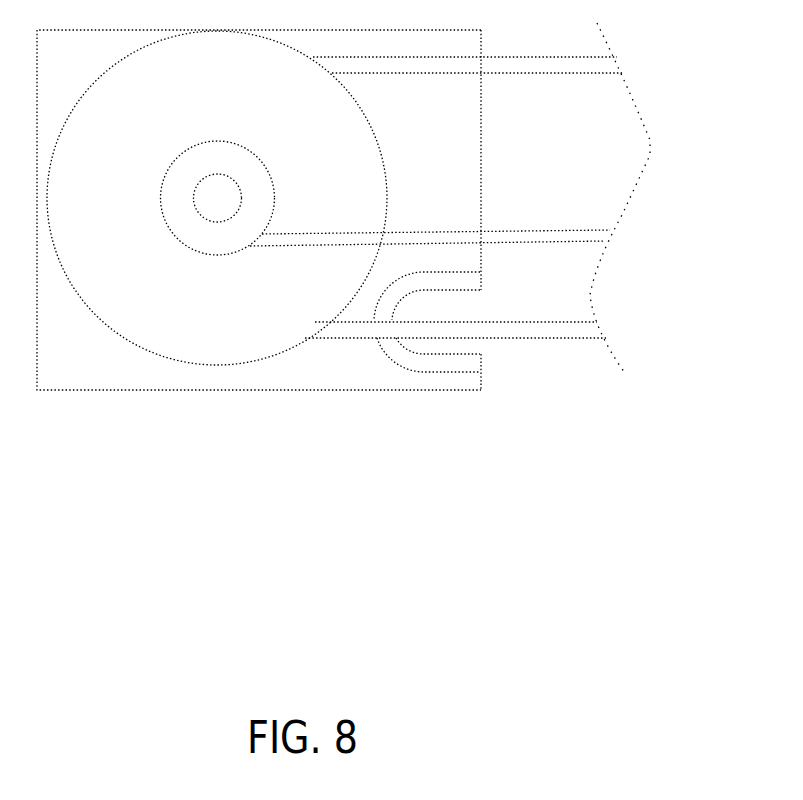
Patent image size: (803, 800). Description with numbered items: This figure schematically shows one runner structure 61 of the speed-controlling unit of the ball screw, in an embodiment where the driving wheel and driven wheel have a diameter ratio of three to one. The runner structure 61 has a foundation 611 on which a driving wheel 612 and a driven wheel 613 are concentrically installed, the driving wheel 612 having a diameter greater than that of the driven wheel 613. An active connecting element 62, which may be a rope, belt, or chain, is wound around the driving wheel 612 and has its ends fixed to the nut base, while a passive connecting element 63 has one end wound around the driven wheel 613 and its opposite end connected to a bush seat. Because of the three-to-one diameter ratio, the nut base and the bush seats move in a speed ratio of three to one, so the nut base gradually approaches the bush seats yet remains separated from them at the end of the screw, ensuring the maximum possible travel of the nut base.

The runner structure 61 is at (308, 457).
The foundation 611 is at (315, 360).
The driving wheel 612 is at (232, 318).
The driven wheel 613 is at (203, 235).
The active connecting element 62 is at (542, 332).
The passive connecting element 63 is at (555, 232).